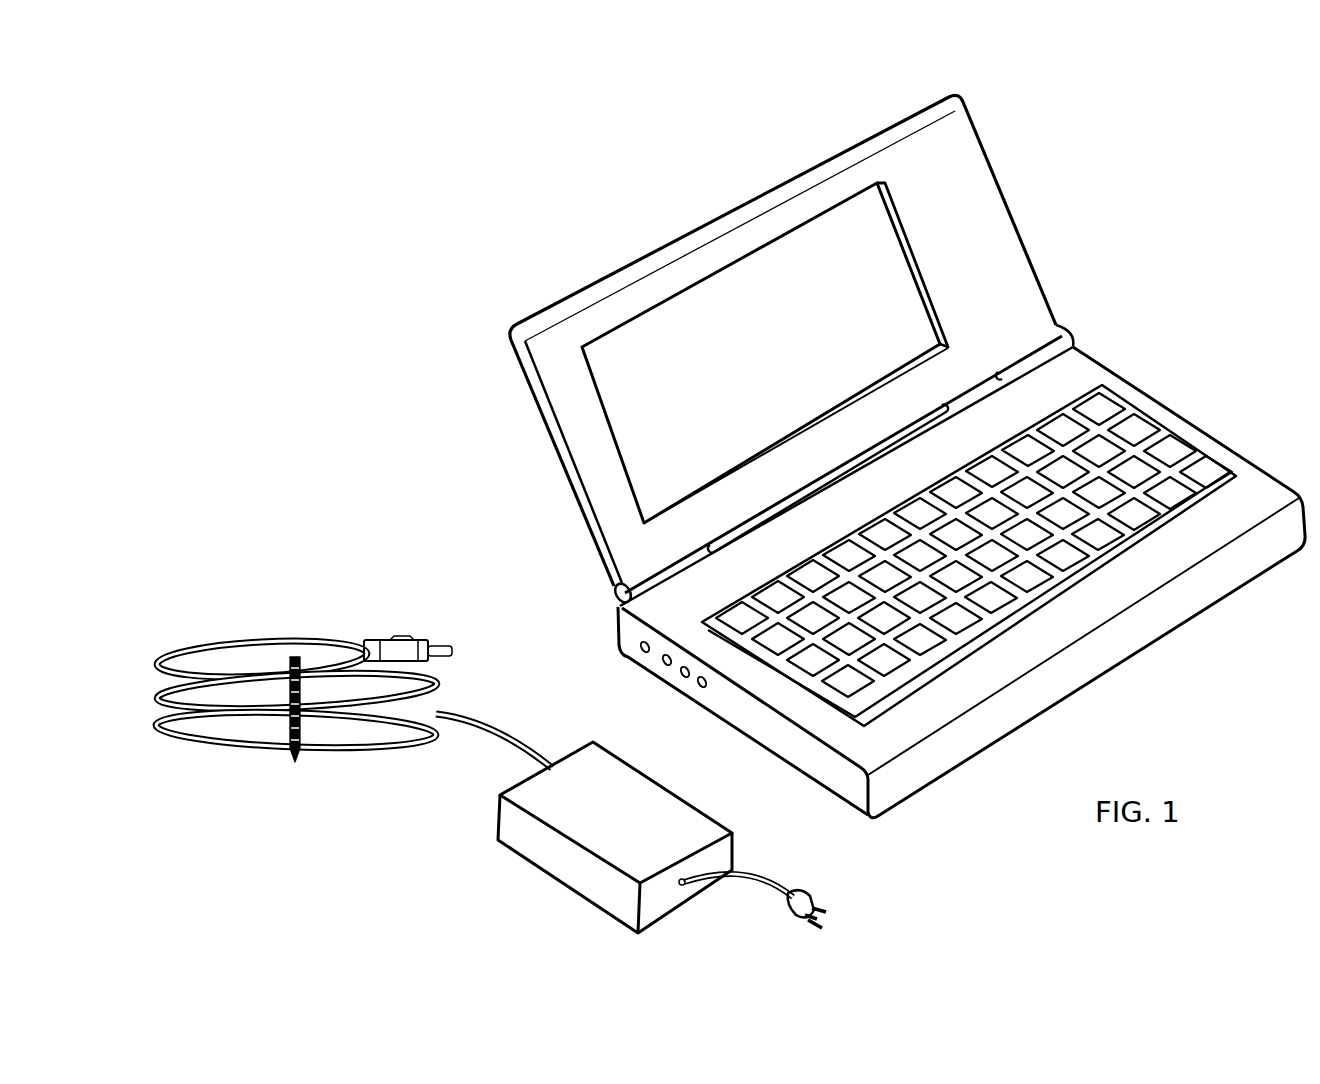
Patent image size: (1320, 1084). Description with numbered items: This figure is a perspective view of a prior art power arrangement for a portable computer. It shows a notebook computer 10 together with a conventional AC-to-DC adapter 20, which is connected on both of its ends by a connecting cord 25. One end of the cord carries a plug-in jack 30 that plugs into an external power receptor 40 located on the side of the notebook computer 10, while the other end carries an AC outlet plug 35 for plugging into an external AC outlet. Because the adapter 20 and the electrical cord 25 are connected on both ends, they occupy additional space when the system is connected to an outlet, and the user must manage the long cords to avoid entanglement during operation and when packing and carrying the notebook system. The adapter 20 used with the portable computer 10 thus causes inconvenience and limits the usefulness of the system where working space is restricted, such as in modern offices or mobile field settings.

The notebook computer 10 is at (602, 318).
The AC-to-DC adapter 20 is at (668, 903).
The connecting cord 25 is at (481, 720).
The plug-in jack 30 is at (400, 640).
The AC outlet plug 35 is at (815, 892).
The external power receptor 40 is at (632, 645).